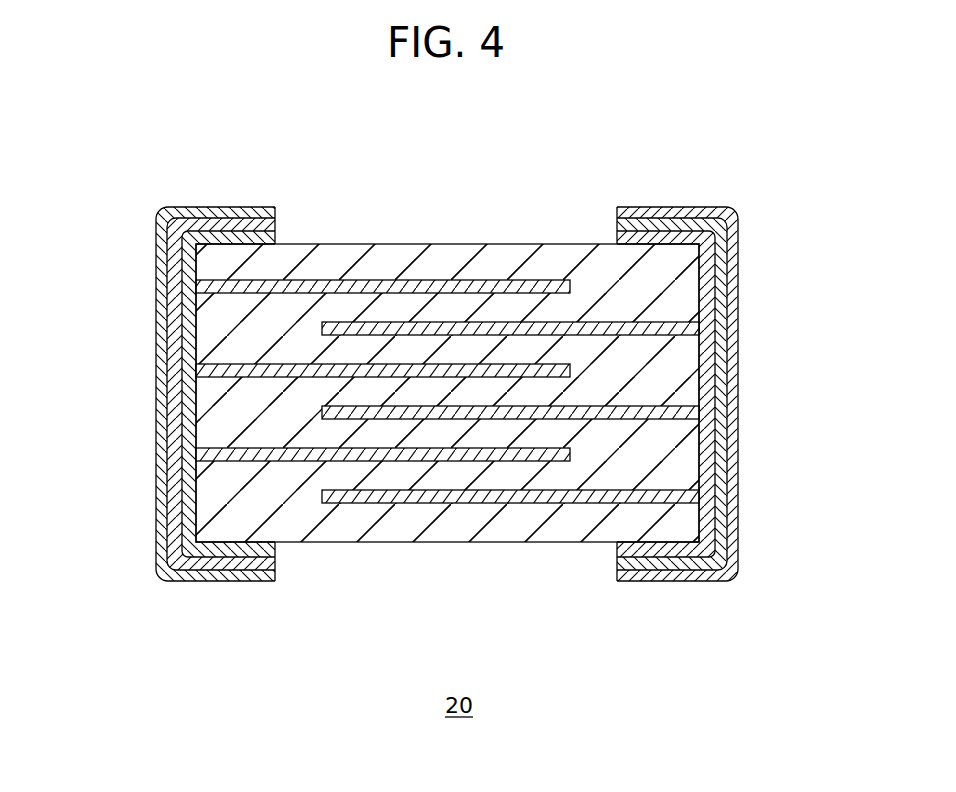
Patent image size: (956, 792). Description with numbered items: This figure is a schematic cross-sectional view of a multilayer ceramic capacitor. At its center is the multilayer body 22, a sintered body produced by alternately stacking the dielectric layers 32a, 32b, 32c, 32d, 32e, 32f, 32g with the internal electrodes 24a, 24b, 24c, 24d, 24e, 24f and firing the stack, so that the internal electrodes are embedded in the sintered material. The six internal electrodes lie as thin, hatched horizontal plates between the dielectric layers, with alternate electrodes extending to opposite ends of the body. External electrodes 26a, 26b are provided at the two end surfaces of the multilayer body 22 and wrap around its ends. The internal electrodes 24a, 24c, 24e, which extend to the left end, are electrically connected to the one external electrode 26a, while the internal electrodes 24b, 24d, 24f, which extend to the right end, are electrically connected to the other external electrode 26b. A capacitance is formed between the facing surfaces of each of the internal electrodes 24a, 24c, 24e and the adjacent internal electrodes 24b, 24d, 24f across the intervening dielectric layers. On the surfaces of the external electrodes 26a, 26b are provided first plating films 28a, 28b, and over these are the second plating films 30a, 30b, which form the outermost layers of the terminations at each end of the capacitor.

The multilayer body 22 is at (448, 243).
The internal electrode 24a is at (570, 285).
The internal electrode 24b is at (703, 330).
The internal electrode 24c is at (570, 370).
The internal electrode 24d is at (703, 413).
The internal electrode 24e is at (570, 455).
The internal electrode 24f is at (703, 498).
The external electrode 26a is at (193, 245).
The external electrode 26b is at (715, 248).
The first plating film 28a is at (177, 537).
The first plating film 28b is at (705, 538).
The second plating film 30a is at (224, 207).
The second plating film 30b is at (680, 207).
The dielectric layer 32a is at (218, 269).
The dielectric layer 32b is at (218, 316).
The dielectric layer 32c is at (218, 350).
The dielectric layer 32d is at (218, 392).
The dielectric layer 32e is at (218, 435).
The dielectric layer 32f is at (218, 470).
The dielectric layer 32g is at (218, 507).